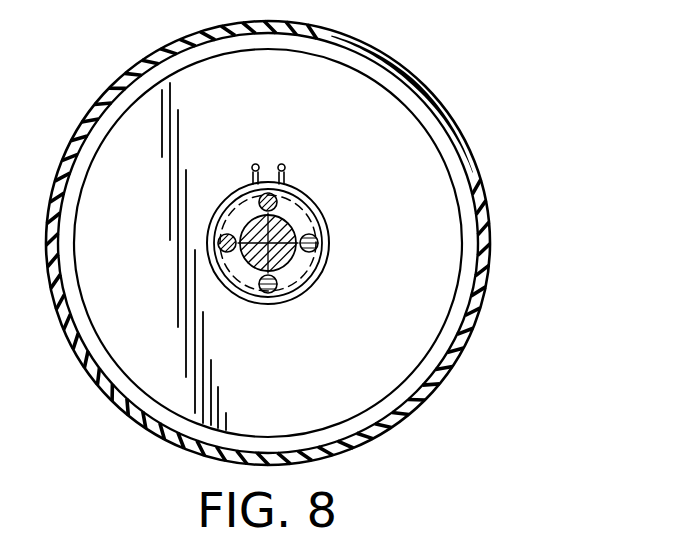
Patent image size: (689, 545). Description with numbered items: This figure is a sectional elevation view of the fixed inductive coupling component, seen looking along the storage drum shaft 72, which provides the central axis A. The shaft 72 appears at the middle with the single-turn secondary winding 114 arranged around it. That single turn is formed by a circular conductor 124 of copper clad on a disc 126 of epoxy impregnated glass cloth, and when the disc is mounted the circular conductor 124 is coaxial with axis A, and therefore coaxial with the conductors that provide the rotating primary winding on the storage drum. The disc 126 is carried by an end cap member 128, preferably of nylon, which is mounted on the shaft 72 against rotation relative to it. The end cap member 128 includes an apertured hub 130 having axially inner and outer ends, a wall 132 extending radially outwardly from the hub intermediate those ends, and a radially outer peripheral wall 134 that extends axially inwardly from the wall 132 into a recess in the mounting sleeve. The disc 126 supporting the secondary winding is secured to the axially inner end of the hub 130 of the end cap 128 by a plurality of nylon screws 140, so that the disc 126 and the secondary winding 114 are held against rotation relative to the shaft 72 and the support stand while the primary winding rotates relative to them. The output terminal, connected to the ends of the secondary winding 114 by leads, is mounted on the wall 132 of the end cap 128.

The storage drum shaft 72 is at (249, 222).
The secondary winding 114 is at (331, 258).
The circular conductor 124 is at (296, 297).
The disc 126 is at (417, 147).
The end cap member 128 is at (436, 84).
The apertured hub 130 is at (318, 218).
The wall 132 is at (351, 61).
The radially outer peripheral wall 134 is at (481, 297).
The nylon screws 140 is at (272, 293).
The axis A is at (278, 234).